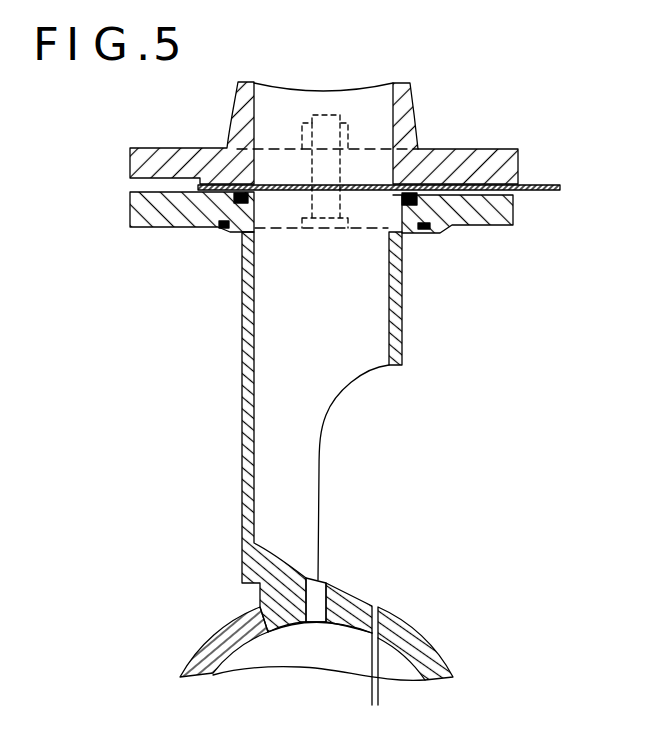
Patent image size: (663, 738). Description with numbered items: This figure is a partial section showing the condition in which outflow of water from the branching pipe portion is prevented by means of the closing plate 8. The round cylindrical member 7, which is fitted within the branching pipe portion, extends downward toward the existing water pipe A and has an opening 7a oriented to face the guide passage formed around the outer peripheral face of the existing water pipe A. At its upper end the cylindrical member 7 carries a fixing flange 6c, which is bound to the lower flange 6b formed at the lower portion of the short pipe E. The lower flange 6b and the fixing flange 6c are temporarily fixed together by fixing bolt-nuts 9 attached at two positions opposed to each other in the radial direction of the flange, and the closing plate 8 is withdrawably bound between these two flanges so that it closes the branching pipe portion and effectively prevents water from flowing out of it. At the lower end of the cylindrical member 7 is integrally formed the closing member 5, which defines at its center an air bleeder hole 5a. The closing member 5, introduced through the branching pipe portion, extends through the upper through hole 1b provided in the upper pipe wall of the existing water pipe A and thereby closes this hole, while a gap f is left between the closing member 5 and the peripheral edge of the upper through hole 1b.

The short pipe E is at (418, 124).
The lower flange 6b is at (518, 152).
The fixing flange 6c is at (487, 229).
The round cylindrical member 7 is at (242, 338).
The opening 7a is at (358, 413).
The closing plate 8 is at (368, 191).
The fixing bolt-nuts 9 is at (320, 228).
The closing member 5 is at (347, 590).
The air bleeder hole 5a is at (316, 626).
The upper through hole 1b is at (372, 598).
The existing water pipe A is at (420, 642).
The gap f is at (405, 700).